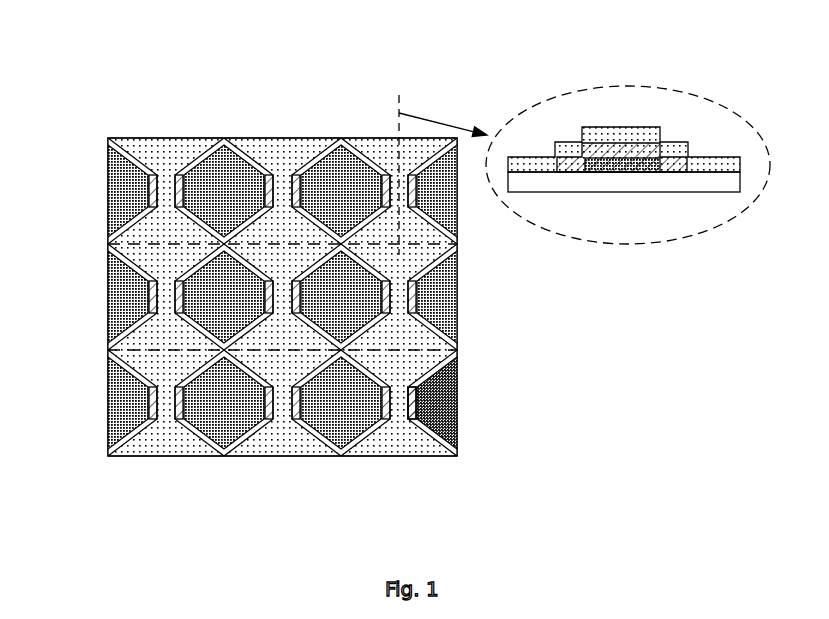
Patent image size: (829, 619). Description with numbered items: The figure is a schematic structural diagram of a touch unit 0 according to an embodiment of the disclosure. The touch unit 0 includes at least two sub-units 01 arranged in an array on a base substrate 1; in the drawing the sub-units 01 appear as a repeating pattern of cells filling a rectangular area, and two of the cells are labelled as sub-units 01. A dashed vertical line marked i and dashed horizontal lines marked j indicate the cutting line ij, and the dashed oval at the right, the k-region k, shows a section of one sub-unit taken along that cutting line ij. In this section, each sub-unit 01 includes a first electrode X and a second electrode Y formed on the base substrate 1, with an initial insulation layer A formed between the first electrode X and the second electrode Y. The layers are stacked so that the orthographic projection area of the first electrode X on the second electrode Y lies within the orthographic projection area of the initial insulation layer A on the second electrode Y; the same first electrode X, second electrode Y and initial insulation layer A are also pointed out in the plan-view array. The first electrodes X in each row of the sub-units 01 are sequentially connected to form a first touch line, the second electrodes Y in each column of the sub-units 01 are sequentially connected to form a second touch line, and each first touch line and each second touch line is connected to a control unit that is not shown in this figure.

The touch unit 0 is at (316, 36).
The sub-unit 01 is at (271, 125).
The base substrate 1 is at (678, 193).
The first electrode X is at (613, 182).
The second electrode Y is at (538, 176).
The initial insulation layer A is at (693, 173).
The k-region k is at (725, 108).
The cutting line i is at (441, 161).
The cutting line j is at (282, 297).